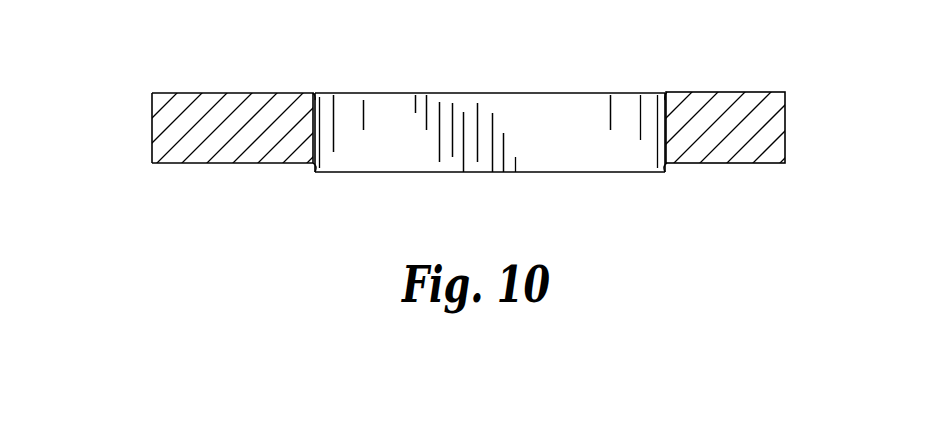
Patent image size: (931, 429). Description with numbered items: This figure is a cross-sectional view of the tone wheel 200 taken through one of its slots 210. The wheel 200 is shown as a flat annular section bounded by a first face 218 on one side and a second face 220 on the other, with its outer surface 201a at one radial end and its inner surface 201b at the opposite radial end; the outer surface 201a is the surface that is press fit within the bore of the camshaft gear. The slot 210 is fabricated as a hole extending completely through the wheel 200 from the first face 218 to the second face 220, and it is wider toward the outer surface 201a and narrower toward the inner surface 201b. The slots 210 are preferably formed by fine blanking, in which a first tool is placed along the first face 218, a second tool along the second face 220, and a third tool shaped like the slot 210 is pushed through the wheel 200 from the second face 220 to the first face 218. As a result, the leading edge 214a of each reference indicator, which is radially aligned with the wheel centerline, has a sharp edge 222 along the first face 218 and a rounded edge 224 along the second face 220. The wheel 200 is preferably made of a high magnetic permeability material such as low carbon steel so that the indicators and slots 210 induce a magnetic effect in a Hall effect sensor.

The tone wheel 200 is at (473, 135).
The slot 210 is at (499, 135).
The leading edge 214a is at (582, 172).
The first face 218 is at (217, 164).
The second face 220 is at (236, 139).
The sharp edge 222 is at (314, 172).
The rounded edge 224 is at (318, 93).
The outer surface 201a is at (786, 123).
The inner surface 201b is at (152, 128).